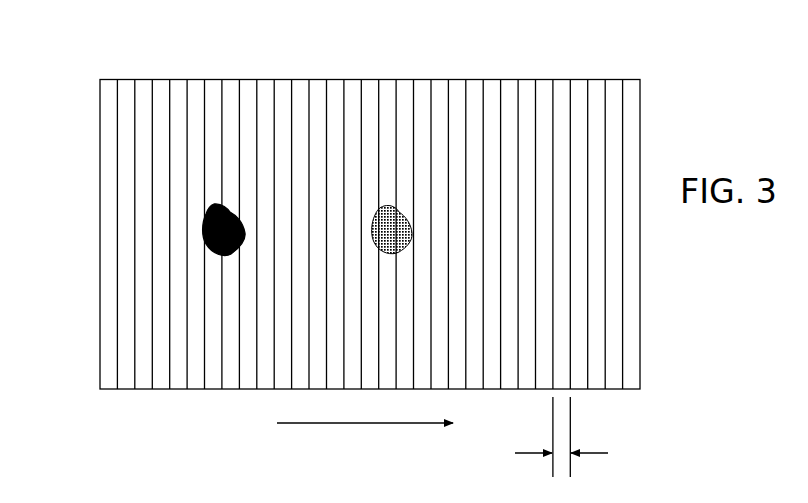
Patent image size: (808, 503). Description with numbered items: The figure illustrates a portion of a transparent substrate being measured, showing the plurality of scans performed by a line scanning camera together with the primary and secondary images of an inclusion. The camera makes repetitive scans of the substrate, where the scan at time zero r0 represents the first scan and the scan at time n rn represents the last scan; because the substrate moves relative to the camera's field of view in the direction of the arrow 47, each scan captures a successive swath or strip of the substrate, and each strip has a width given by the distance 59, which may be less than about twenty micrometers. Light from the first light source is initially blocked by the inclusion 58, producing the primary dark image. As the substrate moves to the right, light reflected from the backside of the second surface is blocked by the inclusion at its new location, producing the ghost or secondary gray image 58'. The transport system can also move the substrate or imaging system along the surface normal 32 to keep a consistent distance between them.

The inclusion 58 is at (283, 133).
The gray image 58' is at (548, 268).
The scan at time n rn is at (631, 81).
The scan at time zero r0 is at (104, 389).
The arrow 47 is at (350, 423).
The distance 59 is at (592, 453).
The surface normal 32 is at (791, 502).